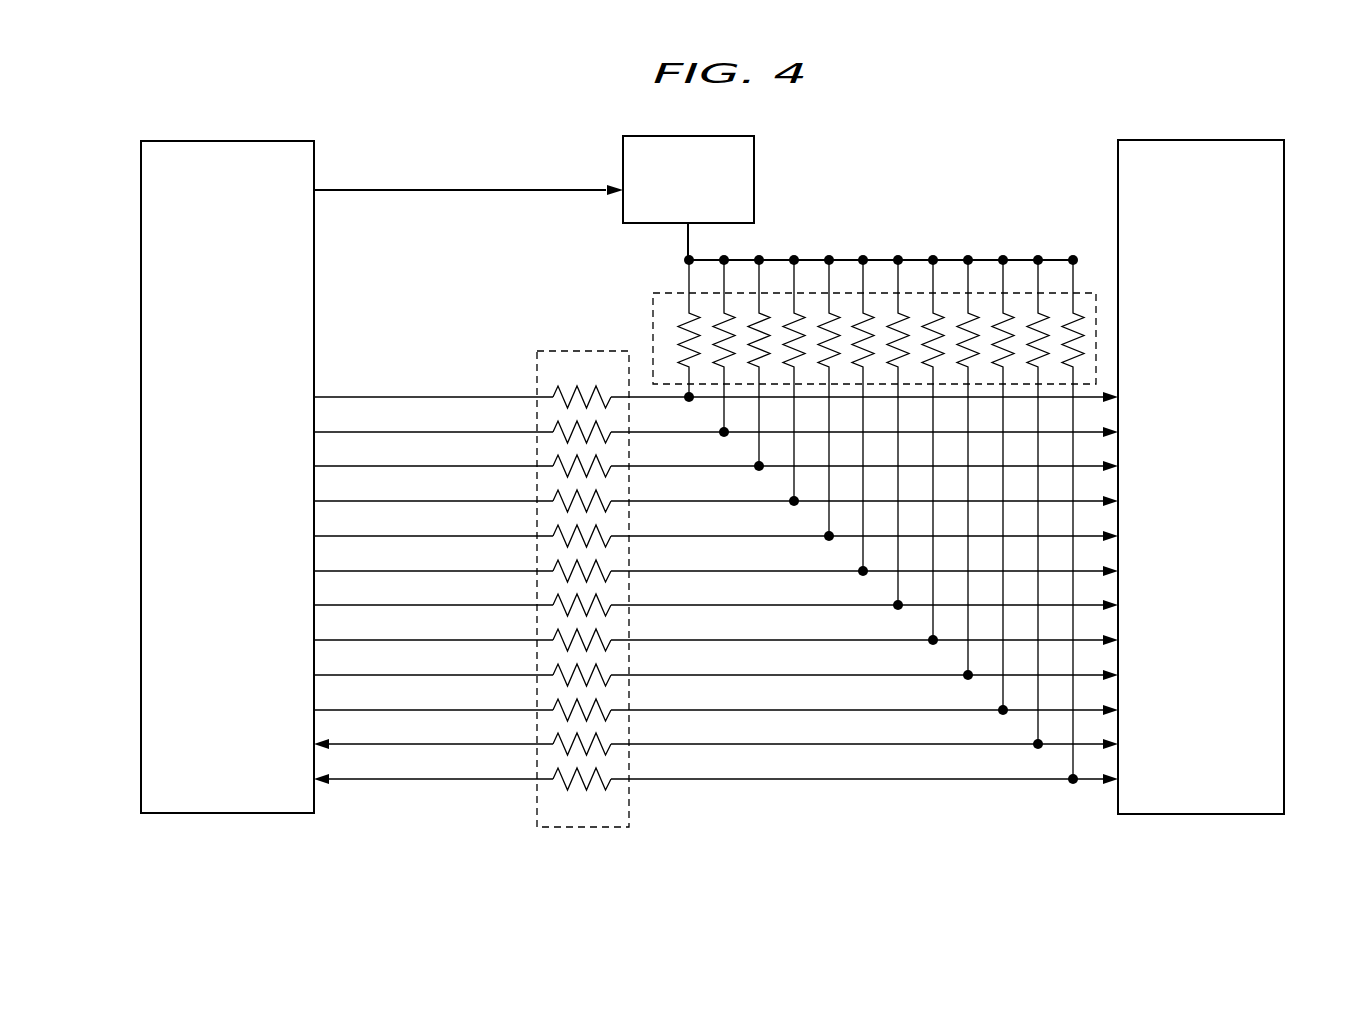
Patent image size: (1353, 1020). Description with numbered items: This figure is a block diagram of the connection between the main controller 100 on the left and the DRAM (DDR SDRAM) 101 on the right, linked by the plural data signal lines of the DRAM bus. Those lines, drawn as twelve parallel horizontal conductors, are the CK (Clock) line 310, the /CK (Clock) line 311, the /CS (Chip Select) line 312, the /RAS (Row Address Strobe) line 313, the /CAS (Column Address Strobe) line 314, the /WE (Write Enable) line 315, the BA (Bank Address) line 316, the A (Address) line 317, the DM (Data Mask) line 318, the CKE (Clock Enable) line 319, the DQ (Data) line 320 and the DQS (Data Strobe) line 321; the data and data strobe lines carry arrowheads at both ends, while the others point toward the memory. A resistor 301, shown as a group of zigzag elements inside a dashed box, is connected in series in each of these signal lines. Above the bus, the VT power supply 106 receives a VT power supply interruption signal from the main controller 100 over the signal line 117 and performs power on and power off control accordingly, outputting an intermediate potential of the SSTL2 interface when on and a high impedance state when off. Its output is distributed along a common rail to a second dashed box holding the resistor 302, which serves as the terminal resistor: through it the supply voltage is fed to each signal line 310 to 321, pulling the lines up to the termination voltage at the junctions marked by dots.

The main controller 100 is at (230, 141).
The DRAM (DDR SDRAM) 101 is at (1208, 140).
The VT power supply 106 is at (754, 180).
The signal line 117 is at (462, 190).
The resistor 301 is at (580, 350).
The resistor (terminal resistor) 302 is at (1088, 293).
The CK (Clock) line 310 is at (342, 396).
The /CK (Clock) line 311 is at (342, 431).
The /CS (Chip Select) line 312 is at (342, 465).
The /RAS (Row Address Strobe) line 313 is at (342, 500).
The /CAS (Column Address Strobe) line 314 is at (342, 535).
The /WE (Write Enable) line 315 is at (342, 570).
The BA (Bank Address) line 316 is at (342, 604).
The A (Address) line 317 is at (342, 639).
The DM (Data Mask) line 318 is at (342, 674).
The CKE (Clock Enable) line 319 is at (342, 709).
The DQ (Data) line 320 is at (342, 743).
The DQS (Data Strobe) line 321 is at (342, 778).